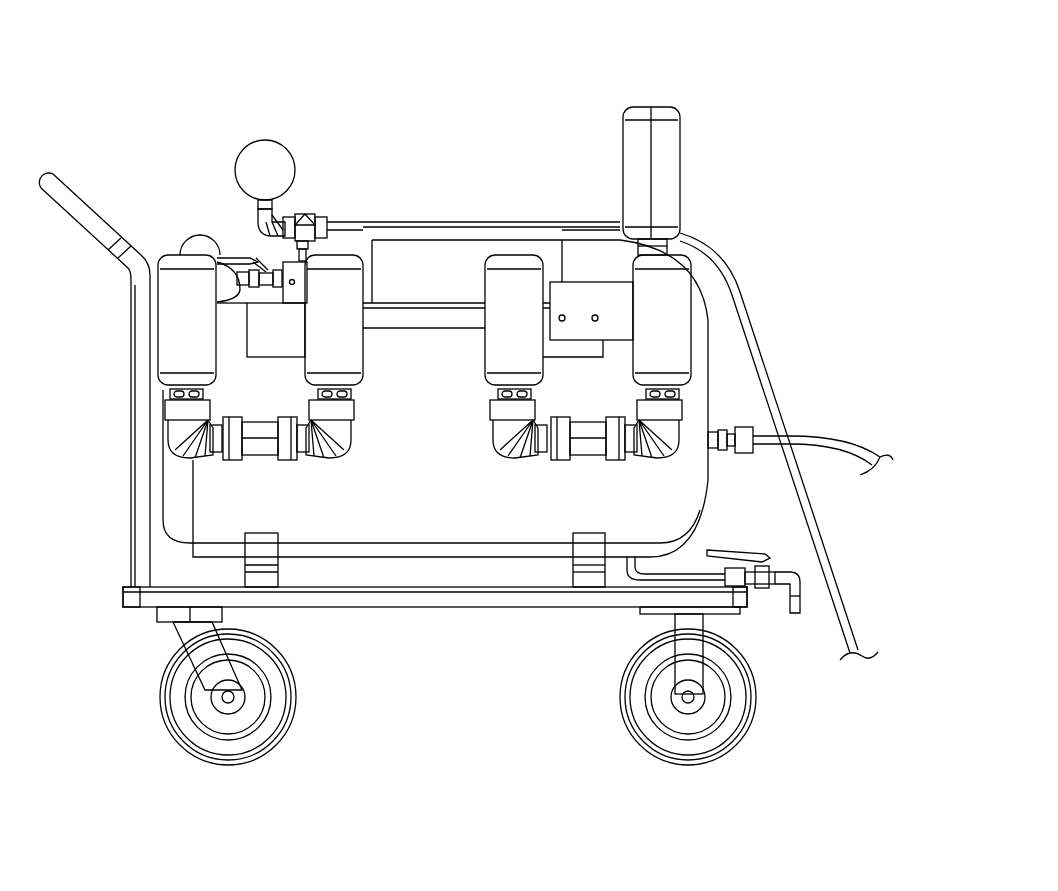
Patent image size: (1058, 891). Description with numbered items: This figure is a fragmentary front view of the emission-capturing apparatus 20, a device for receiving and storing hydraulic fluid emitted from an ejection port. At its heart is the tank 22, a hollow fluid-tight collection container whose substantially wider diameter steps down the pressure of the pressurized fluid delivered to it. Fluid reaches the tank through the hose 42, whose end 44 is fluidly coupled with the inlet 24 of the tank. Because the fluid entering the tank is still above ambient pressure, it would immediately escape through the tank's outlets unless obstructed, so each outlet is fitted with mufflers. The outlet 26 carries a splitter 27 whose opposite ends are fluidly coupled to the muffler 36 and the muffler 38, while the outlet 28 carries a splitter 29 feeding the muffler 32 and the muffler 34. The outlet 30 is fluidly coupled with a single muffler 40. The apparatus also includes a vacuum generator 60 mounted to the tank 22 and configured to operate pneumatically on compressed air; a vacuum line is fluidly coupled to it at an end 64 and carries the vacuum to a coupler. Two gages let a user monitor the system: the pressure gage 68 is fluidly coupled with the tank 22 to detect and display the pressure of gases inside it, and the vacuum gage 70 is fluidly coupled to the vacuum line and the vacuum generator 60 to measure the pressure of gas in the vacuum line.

The emission-capturing apparatus 20 is at (822, 36).
The tank 22 is at (410, 503).
The inlet 24 is at (716, 430).
The outlet 26 is at (262, 415).
The splitter 27 is at (248, 447).
The outlet 28 is at (590, 415).
The splitter 29 is at (575, 447).
The outlet 30 is at (633, 252).
The muffler 32 is at (660, 303).
The muffler 34 is at (512, 296).
The muffler 36 is at (330, 276).
The muffler 38 is at (176, 276).
The muffler 40 is at (668, 136).
The hose 42 is at (845, 452).
The end 44 is at (742, 452).
The vacuum generator 60 is at (285, 266).
The end 64 is at (327, 220).
The pressure gage 68 is at (200, 248).
The vacuum gage 70 is at (265, 140).